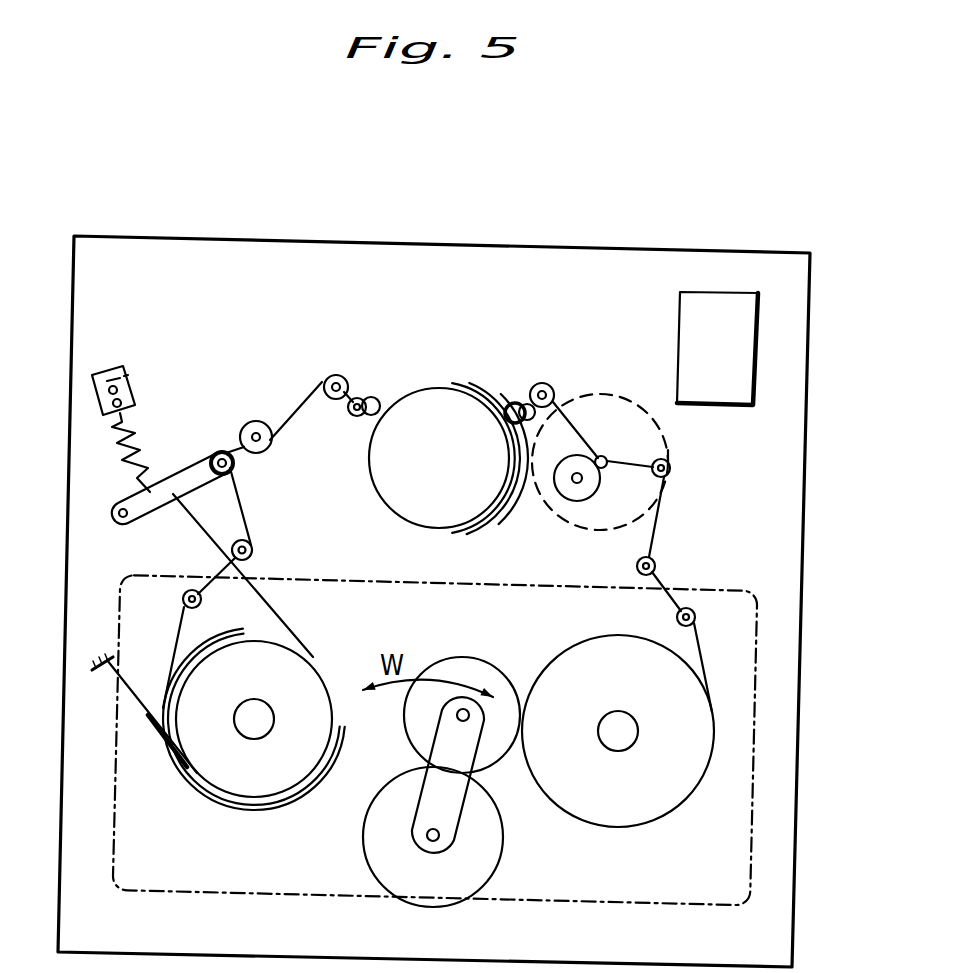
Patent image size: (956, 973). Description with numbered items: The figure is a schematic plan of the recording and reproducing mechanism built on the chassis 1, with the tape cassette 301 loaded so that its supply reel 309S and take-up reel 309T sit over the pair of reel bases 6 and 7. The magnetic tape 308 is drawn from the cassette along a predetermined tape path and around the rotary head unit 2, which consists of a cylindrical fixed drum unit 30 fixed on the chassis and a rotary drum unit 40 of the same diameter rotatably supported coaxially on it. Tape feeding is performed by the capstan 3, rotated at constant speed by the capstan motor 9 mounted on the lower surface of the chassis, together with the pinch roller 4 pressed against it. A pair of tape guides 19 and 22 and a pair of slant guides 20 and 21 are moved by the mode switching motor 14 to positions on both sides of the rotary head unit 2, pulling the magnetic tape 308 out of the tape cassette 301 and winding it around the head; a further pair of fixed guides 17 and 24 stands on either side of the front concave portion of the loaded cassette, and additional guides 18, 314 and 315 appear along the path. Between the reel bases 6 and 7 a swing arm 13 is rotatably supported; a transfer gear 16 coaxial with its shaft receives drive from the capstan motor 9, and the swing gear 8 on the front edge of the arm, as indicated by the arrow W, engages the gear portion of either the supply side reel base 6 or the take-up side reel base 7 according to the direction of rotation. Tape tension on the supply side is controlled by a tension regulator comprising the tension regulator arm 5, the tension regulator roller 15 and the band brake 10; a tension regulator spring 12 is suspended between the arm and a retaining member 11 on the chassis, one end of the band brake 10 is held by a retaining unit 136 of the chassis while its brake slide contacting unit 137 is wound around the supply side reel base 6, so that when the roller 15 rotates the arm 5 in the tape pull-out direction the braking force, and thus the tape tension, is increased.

The chassis 1 is at (806, 421).
The rotary head unit 2 is at (432, 404).
The capstan 3 is at (608, 458).
The pinch roller 4 is at (564, 503).
The tension regulator arm 5 is at (183, 468).
The supply side reel base 6 is at (232, 780).
The take-up side reel base 7 is at (589, 813).
The swing gear 8 is at (449, 664).
The capstan motor 9 is at (615, 531).
The band brake 10 is at (196, 531).
The retaining member 11 is at (108, 366).
The tension regulator spring 12 is at (110, 458).
The swing arm 13 is at (428, 792).
The mode switching motor 14 is at (747, 366).
The tension regulator roller 15 is at (238, 470).
The transfer gear 16 is at (368, 860).
The fixed guide 17 is at (253, 552).
The tension post 18 is at (254, 421).
The tape guide 19 is at (336, 375).
The slant guide 20 is at (366, 399).
The slant guide 21 is at (514, 403).
The tape guide 22 is at (548, 384).
The fixed guide 24 is at (655, 556).
The fixed drum unit 30 is at (498, 518).
The rotary drum unit 40 is at (483, 528).
The retaining unit 136 is at (105, 650).
The brake slide contacting unit 137 is at (273, 808).
The tape cassette 301 is at (278, 887).
The magnetic tape 308 is at (660, 516).
The supply reel 309S is at (200, 755).
The take-up reel 309T is at (660, 803).
The guide roller 314 is at (184, 601).
The guide roller 315 is at (700, 607).